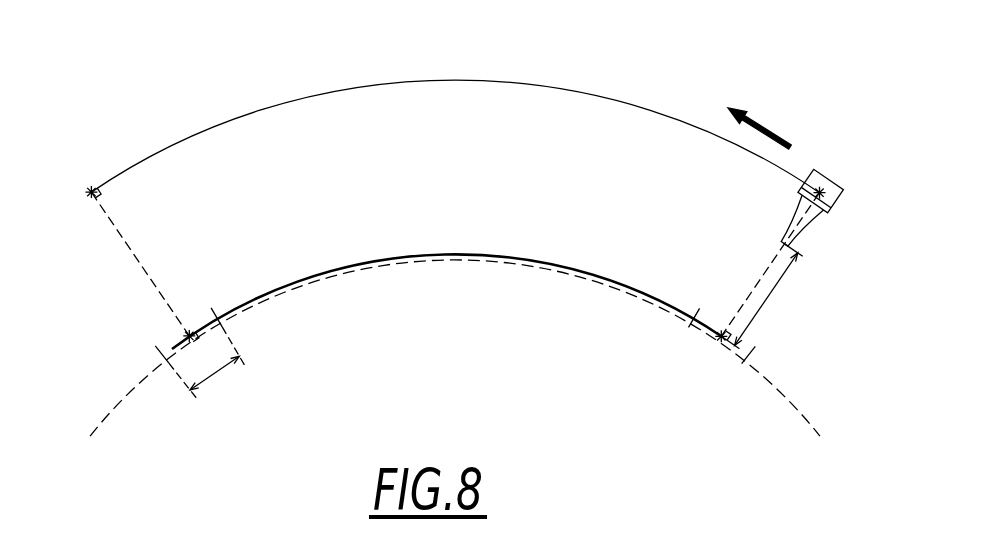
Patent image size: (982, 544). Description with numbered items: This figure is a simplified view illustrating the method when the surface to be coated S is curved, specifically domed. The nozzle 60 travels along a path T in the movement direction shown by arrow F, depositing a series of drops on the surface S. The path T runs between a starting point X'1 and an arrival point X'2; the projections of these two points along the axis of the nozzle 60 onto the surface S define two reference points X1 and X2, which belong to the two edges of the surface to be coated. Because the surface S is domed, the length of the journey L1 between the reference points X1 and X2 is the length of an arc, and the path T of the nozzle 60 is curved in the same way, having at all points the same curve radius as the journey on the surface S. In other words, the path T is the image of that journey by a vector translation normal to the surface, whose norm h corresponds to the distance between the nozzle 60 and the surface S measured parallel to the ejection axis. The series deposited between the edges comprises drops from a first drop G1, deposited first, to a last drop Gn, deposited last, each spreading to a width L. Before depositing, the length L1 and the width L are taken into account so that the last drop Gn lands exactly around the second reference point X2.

The path of the nozzle T is at (455, 80).
The surface to be coated S is at (548, 252).
The length of the journey L1 is at (455, 258).
The last drop of the series Gn is at (202, 318).
The first drop of the series G1 is at (711, 314).
The second reference point X2 is at (182, 338).
The arrival point X'2 is at (105, 261).
The first reference point X1 is at (725, 332).
The starting point X'1 is at (814, 262).
The width of a drop L is at (214, 380).
The height between tool and surface h is at (761, 296).
The movement direction of the nozzle F is at (759, 127).
The nozzle 60 is at (831, 190).